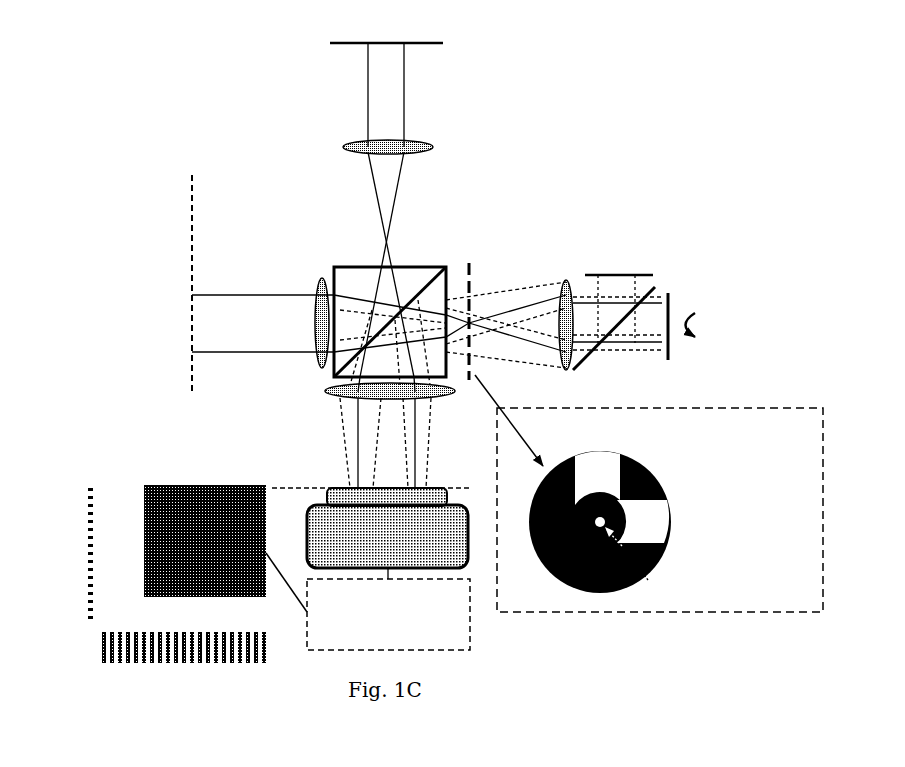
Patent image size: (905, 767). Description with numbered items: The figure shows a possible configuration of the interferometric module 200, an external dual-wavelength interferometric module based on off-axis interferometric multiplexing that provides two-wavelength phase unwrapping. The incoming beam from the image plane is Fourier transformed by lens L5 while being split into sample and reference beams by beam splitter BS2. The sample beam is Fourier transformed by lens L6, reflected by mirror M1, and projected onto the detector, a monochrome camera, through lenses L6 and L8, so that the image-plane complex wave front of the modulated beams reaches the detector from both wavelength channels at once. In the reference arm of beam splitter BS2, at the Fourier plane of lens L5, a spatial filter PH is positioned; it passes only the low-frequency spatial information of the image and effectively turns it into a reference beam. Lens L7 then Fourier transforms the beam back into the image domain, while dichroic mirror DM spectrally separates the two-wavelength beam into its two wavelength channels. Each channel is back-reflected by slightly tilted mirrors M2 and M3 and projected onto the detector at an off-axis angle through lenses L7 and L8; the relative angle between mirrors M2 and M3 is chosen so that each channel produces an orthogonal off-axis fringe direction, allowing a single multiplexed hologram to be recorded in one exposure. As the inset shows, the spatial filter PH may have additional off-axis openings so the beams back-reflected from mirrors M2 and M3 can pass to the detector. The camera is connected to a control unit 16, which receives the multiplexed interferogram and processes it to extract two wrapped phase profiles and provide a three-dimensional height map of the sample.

The interferometric module 200 is at (226, 75).
The control unit 16 is at (388, 614).
The mirror M1 is at (386, 23).
The lens L6 is at (408, 148).
The lens L5 is at (313, 304).
The beam splitter BS2 is at (391, 305).
The spatial filter PH is at (472, 305).
The lens L7 is at (559, 305).
The mirror M2 is at (619, 290).
The dichroic mirror DM is at (614, 341).
The mirror M3 is at (695, 325).
The lens L8 is at (397, 408).